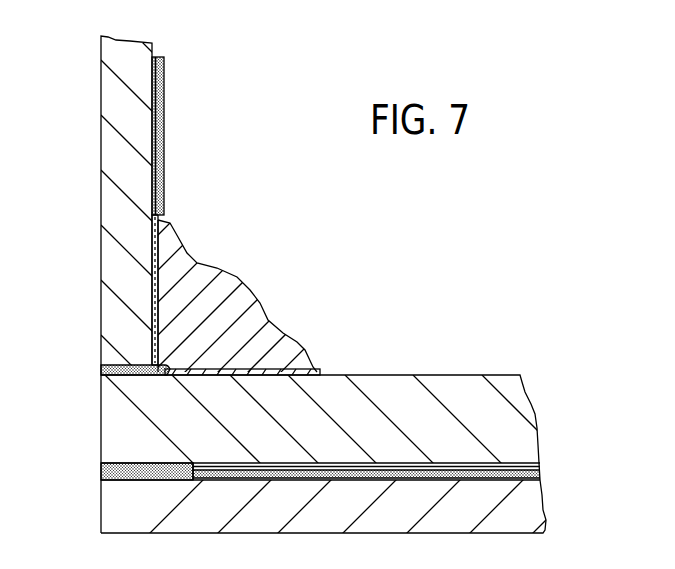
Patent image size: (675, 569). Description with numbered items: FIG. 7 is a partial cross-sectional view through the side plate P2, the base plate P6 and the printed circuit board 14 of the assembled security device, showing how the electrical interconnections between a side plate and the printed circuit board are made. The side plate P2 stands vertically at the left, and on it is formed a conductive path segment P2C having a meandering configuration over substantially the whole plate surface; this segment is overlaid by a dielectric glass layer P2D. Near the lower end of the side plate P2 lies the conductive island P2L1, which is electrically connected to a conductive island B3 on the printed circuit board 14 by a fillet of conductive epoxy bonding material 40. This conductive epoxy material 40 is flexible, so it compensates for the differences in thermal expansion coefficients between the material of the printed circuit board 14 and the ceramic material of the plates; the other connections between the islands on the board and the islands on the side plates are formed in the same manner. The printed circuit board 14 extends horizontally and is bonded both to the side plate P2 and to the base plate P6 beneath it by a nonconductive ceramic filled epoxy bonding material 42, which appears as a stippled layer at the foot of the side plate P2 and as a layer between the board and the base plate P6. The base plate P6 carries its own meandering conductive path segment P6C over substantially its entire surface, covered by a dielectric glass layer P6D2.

The side plate P2 is at (118, 217).
The conductive path segment P2C is at (153, 101).
The dielectric glass layer P2D is at (165, 139).
The conductive island P2L1 is at (156, 267).
The conductive epoxy bonding material 40 is at (222, 285).
The nonconductive ceramic filled epoxy bonding material 42 is at (102, 368).
The conductive island B3 is at (308, 358).
The printed circuit board 14 is at (120, 410).
The base plate P6 is at (130, 510).
The dielectric glass layer P6D2 is at (540, 473).
The conductive path segment P6C is at (413, 478).